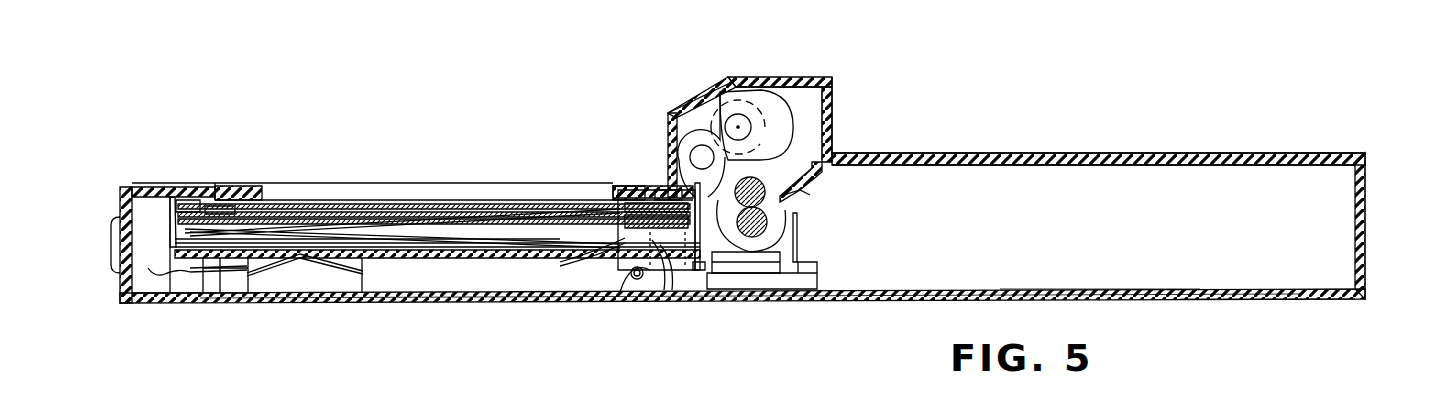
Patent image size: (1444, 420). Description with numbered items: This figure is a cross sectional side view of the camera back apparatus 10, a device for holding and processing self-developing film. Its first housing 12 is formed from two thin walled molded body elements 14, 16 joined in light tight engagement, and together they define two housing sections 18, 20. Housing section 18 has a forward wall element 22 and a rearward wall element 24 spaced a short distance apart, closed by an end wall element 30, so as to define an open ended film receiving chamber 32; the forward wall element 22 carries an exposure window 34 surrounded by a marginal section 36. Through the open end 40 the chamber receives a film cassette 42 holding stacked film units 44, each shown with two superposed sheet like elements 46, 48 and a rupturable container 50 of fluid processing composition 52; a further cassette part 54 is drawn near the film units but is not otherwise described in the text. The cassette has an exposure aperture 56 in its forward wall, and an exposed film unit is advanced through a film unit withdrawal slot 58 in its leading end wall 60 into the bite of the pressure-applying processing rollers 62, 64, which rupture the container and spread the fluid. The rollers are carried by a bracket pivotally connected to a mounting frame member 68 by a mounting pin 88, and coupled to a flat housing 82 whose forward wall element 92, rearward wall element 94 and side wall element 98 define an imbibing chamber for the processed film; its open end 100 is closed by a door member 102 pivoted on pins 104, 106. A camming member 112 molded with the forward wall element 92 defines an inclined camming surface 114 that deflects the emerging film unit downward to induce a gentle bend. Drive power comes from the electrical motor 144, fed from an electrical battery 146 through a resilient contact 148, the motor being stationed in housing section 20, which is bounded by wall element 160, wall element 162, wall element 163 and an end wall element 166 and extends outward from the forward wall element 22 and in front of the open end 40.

The camera back apparatus 10 is at (846, 76).
The first housing 12 is at (380, 304).
The body element 14 is at (757, 80).
The body element 16 is at (458, 301).
The housing section 18 is at (300, 304).
The housing section 20 is at (838, 117).
The forward wall element 22 is at (627, 192).
The rearward wall element 24 is at (200, 304).
The end wall element 30 is at (118, 250).
The film receiving chamber 32 is at (282, 275).
The exposure window 34 is at (223, 190).
The marginal section 36 is at (168, 225).
The open end 40 is at (687, 290).
The film cassette 42 is at (567, 260).
The film unit 44 is at (515, 205).
The sheet like element 46 is at (470, 203).
The sheet like element 48 is at (537, 224).
The rupturable container 50 is at (670, 247).
The fluid processing composition 52 is at (650, 270).
The retainer 54 is at (190, 188).
The exposure aperture 56 is at (225, 205).
The film unit withdrawal slot 58 is at (722, 105).
The leading end wall 60 is at (712, 262).
The pressure-applying processing roller 62 is at (768, 196).
The pressure-applying processing roller 64 is at (783, 290).
The mounting frame member 68 is at (625, 240).
The housing 82 is at (1148, 150).
The mounting pin 88 is at (640, 280).
The forward wall element 92 is at (1050, 155).
The rearward wall element 94 is at (1190, 302).
The side wall element 98 is at (1097, 268).
The open end 100 is at (1381, 183).
The door member 102 is at (1367, 238).
The pin 104 is at (1337, 152).
The pin 106 is at (1327, 300).
The camming member 112 is at (810, 194).
The camming surface 114 is at (783, 222).
The electrical motor 144 is at (793, 100).
The electrical battery 146 is at (440, 252).
The resilient contact 148 is at (340, 268).
The wall element 160 is at (680, 112).
The wall element 162 is at (795, 78).
The wall element 163 is at (832, 100).
The end wall element 166 is at (813, 140).